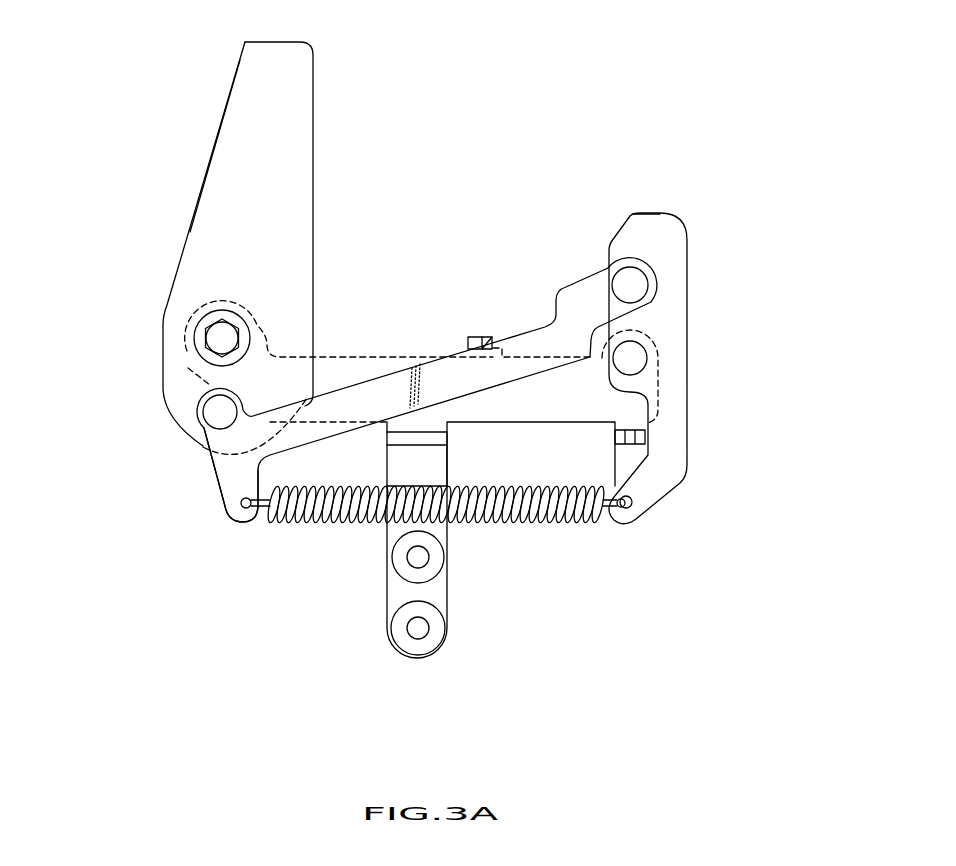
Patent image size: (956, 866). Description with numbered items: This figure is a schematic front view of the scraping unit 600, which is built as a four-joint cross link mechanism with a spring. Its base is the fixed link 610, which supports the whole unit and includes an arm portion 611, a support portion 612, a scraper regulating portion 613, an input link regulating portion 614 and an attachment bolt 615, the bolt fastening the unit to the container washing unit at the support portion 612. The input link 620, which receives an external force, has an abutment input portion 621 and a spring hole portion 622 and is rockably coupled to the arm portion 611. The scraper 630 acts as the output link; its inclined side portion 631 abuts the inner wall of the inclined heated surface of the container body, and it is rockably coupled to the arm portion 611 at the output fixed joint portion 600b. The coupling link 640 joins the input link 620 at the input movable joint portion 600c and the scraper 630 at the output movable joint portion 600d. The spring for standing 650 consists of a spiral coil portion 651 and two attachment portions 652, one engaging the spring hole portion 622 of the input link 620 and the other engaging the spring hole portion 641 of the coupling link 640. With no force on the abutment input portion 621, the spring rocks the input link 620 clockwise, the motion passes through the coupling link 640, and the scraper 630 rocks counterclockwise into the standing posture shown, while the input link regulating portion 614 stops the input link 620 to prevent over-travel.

The scraping unit 600 is at (473, 115).
The output fixed joint portion 600b is at (636, 360).
The input movable joint portion 600c is at (636, 287).
The output movable joint portion 600d is at (212, 413).
The fixed link 610 is at (360, 355).
The arm portion 611 is at (513, 408).
The support portion 612 is at (394, 462).
The scraper regulating portion 613 is at (488, 336).
The input link regulating portion 614 is at (632, 448).
The attachment bolt 615 is at (424, 627).
The input link 620 is at (690, 324).
The abutment input portion 621 is at (651, 212).
The spring hole portion 622 is at (632, 498).
The scraper 630 is at (224, 101).
The inclined side portion 631 is at (212, 148).
The coupling link 640 is at (539, 326).
The spring hole portion 641 is at (250, 513).
The spring for standing 650 is at (547, 527).
The coil portion 651 is at (325, 523).
The attachment portion 652 is at (254, 498).